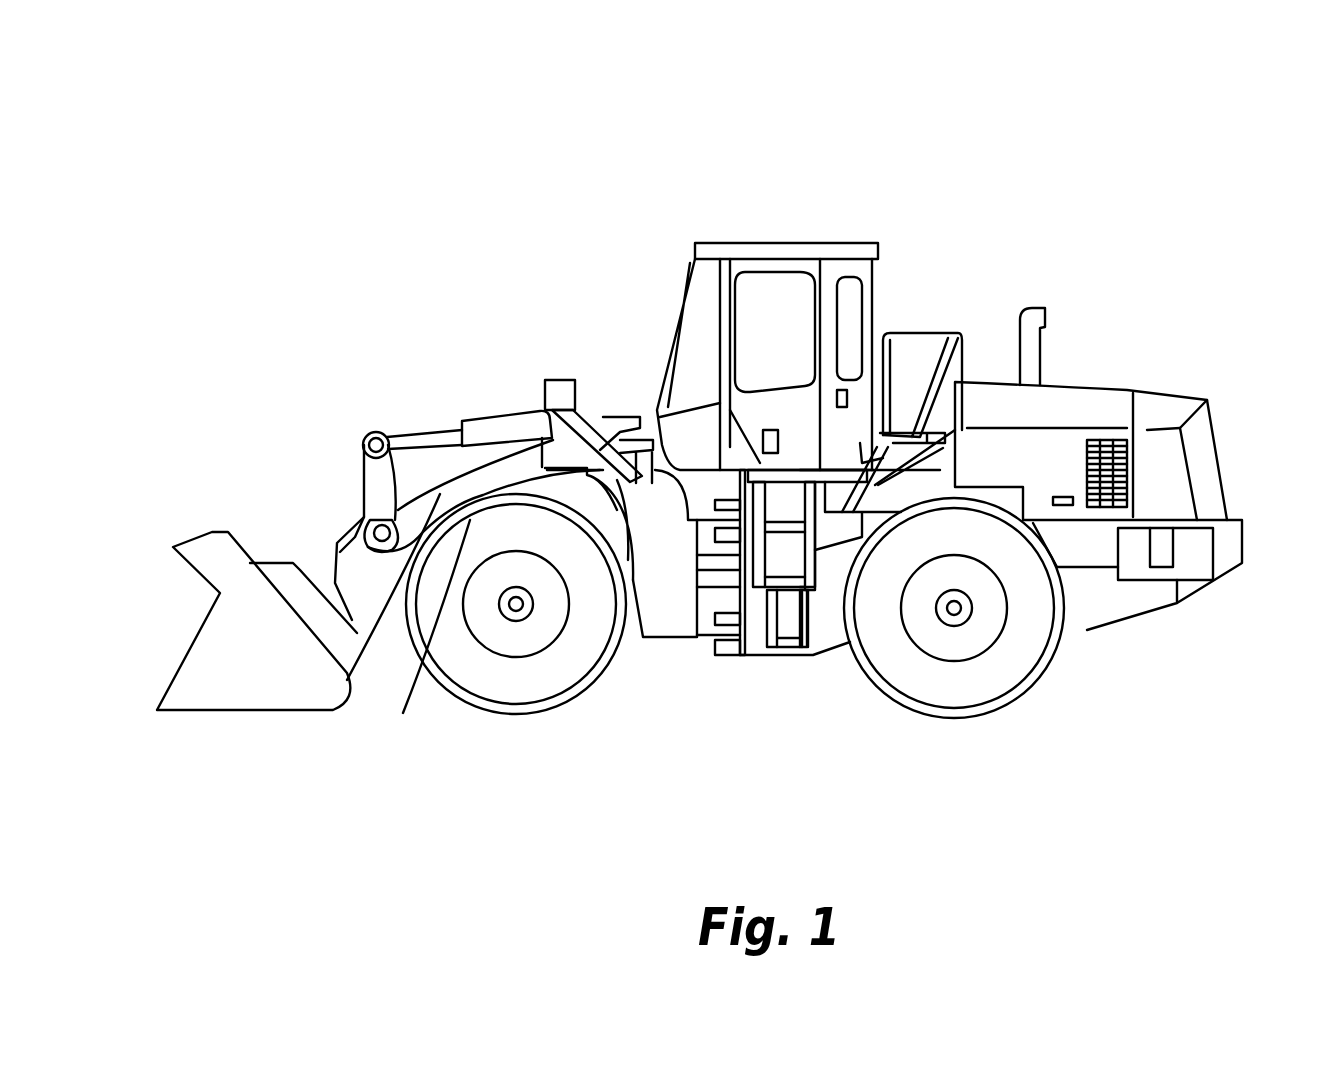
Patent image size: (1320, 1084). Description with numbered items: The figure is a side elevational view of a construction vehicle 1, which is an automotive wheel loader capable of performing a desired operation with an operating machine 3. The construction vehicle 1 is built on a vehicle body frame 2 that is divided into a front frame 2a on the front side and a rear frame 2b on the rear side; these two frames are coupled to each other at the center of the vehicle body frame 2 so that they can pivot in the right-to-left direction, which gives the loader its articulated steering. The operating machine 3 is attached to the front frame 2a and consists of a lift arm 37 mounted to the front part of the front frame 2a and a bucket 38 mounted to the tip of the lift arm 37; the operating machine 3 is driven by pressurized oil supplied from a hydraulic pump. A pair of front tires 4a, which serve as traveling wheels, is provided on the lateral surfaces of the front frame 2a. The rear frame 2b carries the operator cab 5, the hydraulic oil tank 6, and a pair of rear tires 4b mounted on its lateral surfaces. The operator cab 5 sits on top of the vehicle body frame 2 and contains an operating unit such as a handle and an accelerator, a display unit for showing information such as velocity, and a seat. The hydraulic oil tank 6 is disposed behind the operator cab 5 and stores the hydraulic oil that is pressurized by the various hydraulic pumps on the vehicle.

The construction vehicle 1 is at (1023, 150).
The vehicle body frame 2 is at (765, 670).
The front frame 2a is at (673, 622).
The rear frame 2b is at (830, 622).
The operating machine 3 is at (158, 315).
The front tires 4a is at (530, 695).
The rear tires 4b is at (972, 697).
The operator cab 5 is at (800, 228).
The hydraulic oil tank 6 is at (915, 397).
The lift arm 37 is at (467, 493).
The bucket 38 is at (203, 556).